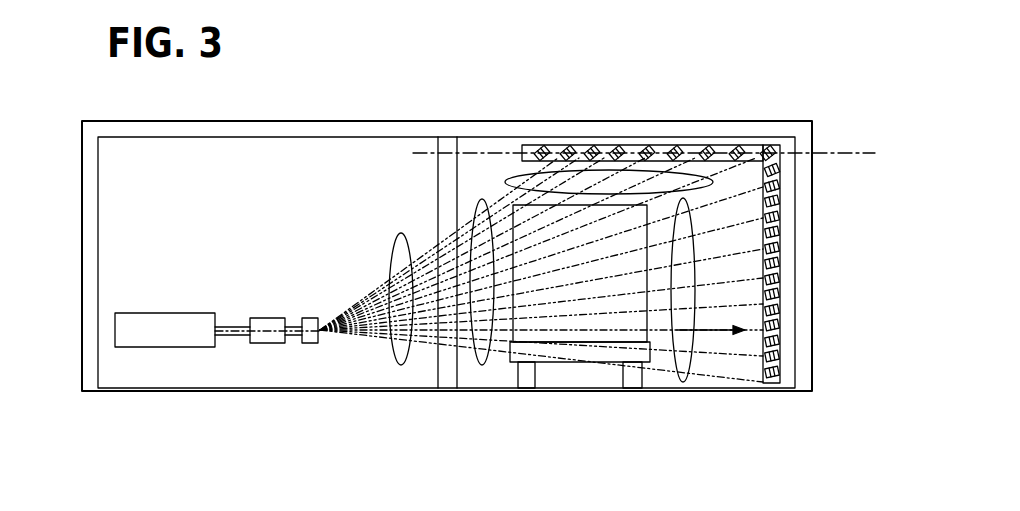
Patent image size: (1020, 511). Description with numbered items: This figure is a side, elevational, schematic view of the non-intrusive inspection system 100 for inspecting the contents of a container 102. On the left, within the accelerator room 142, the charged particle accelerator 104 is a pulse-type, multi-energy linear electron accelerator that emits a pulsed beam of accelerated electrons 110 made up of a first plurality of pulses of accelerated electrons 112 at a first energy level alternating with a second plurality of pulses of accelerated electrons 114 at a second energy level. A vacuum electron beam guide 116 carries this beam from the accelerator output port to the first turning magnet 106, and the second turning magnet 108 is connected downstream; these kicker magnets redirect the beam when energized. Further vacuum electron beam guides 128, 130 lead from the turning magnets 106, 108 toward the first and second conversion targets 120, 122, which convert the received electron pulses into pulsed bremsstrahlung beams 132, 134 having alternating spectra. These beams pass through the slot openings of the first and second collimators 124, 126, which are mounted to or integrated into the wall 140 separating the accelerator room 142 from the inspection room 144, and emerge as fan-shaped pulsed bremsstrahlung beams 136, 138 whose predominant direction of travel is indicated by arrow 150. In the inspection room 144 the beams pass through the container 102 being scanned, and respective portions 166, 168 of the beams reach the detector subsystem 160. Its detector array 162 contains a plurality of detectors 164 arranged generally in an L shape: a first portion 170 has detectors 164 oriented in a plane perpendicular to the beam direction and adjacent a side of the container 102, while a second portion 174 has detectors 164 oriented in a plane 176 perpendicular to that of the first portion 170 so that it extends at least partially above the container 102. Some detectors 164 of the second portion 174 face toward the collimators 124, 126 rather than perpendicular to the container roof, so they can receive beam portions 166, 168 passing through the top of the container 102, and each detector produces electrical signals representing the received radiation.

The non-intrusive inspection system 100 is at (447, 208).
The container 102 is at (695, 251).
The charged particle accelerator 104 is at (163, 307).
The first turning magnet 106 is at (195, 254).
The second turning magnet 108 is at (195, 254).
The pulsed beam of accelerated electrons 110 is at (456, 316).
The first plurality of pulses of accelerated electrons 112 is at (456, 316).
The second plurality of pulses of accelerated electrons 114 is at (456, 316).
The vacuum electron beam guide 116 is at (215, 283).
The first conversion target 120 is at (255, 243).
The second conversion target 122 is at (255, 243).
The first collimator 124 is at (391, 296).
The second collimator 126 is at (391, 296).
The vacuum electron beam guide 128 is at (264, 392).
The vacuum electron beam guide 130 is at (264, 392).
The first pulsed bremsstrahlung beam 132 is at (366, 285).
The second pulsed bremsstrahlung beam 134 is at (366, 285).
The first pulsed bremsstrahlung beam 136 is at (520, 324).
The second pulsed bremsstrahlung beam 138 is at (520, 324).
The wall 140 is at (374, 237).
The accelerator room 142 is at (417, 289).
The inspection room 144 is at (644, 297).
The arrow 150 is at (679, 399).
The detector subsystem 160 is at (704, 197).
The detector array 162 is at (704, 197).
The detectors 164 is at (707, 229).
The portion of the first pulsed bremsstrahlung beam 166 is at (556, 255).
The portion of the second pulsed bremsstrahlung beam 168 is at (556, 255).
The first portion of the detector array 170 is at (822, 264).
The second portion of the detector array 174 is at (665, 109).
The plane 176 is at (637, 110).